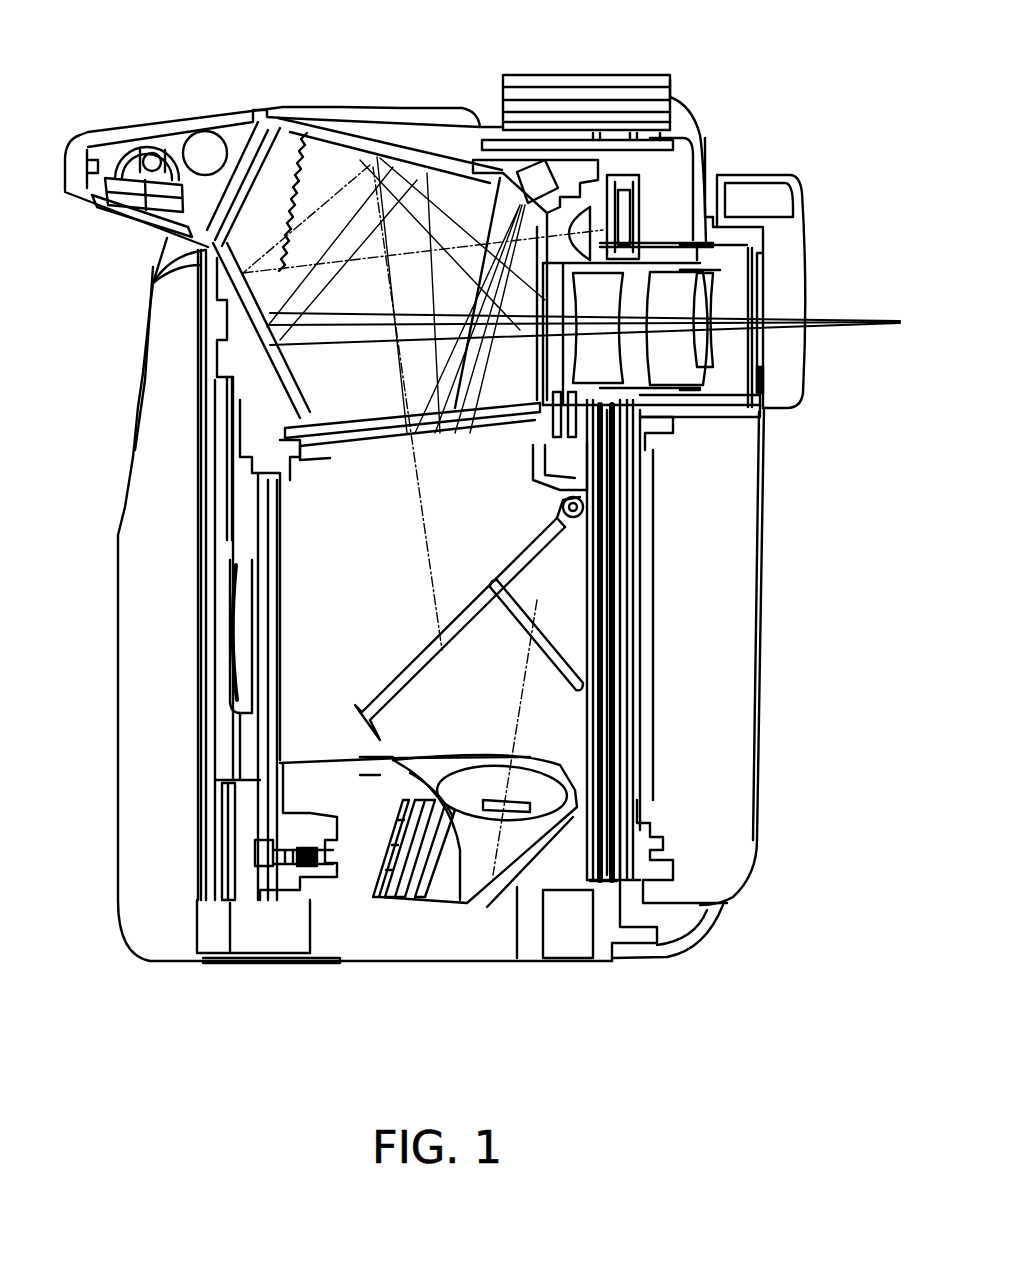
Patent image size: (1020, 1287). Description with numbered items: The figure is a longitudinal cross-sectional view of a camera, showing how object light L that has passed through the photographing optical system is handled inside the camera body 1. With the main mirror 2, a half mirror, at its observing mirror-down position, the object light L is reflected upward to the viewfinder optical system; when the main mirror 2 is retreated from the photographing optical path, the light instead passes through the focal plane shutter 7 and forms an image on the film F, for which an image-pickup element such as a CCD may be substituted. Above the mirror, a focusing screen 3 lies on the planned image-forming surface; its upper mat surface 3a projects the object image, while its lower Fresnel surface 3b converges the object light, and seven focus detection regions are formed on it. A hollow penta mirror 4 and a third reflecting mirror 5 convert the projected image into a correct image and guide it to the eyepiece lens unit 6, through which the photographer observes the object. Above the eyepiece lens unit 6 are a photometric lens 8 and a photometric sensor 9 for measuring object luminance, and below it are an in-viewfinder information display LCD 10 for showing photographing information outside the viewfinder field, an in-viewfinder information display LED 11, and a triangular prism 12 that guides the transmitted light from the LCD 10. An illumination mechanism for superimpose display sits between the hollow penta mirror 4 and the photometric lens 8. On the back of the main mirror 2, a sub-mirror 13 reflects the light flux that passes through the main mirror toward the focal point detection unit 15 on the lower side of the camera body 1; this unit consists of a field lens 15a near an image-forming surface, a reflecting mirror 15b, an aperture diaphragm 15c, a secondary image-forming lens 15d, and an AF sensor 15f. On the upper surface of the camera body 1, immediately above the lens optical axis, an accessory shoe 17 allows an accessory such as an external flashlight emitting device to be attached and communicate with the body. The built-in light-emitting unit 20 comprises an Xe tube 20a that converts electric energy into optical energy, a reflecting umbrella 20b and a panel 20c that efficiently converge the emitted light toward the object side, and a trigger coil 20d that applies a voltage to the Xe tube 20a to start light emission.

The camera body 1 is at (730, 545).
The main mirror 2 is at (400, 673).
The focusing screen 3 is at (372, 455).
The mat surface 3a is at (300, 420).
The Fresnel surface 3b is at (315, 455).
The hollow penta mirror 4 is at (330, 135).
The third reflecting mirror 5 is at (153, 283).
The eyepiece lens unit 6 is at (557, 363).
The focal plane shutter 7 is at (622, 645).
The photometric lens 8 is at (600, 165).
The photometric sensor 9 is at (640, 200).
The in-viewfinder information display LCD 10 is at (535, 465).
The in-viewfinder information display LED 11 is at (560, 495).
The triangular prism 12 is at (520, 440).
The sub-mirror 13 is at (503, 613).
The focal point detection unit 15 is at (458, 903).
The field lens 15a is at (530, 790).
The reflecting mirror 15b is at (545, 880).
The aperture diaphragm 15c is at (425, 905).
The secondary image-forming lens 15d is at (400, 905).
The AF sensor 15f is at (378, 903).
The accessory shoe 17 is at (625, 75).
The light-emitting unit 20 is at (130, 125).
The Xe tube 20a is at (125, 150).
The reflecting umbrella 20b is at (163, 153).
The panel 20c is at (130, 195).
The trigger coil 20d is at (210, 145).
The film F is at (640, 605).
The object light L is at (535, 637).